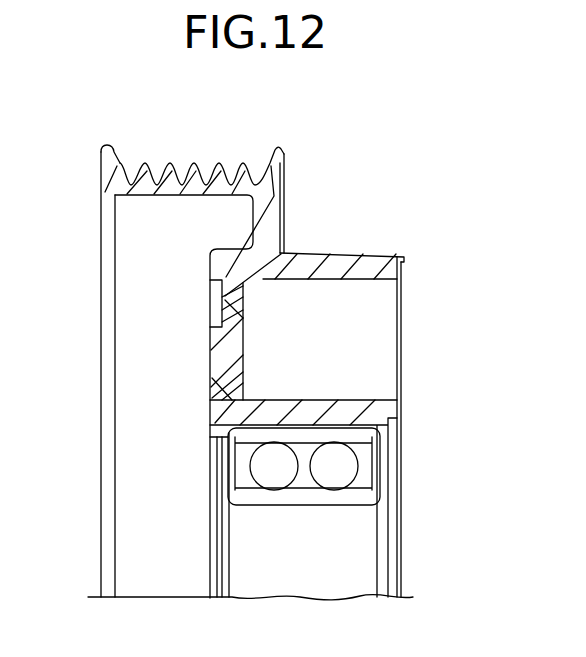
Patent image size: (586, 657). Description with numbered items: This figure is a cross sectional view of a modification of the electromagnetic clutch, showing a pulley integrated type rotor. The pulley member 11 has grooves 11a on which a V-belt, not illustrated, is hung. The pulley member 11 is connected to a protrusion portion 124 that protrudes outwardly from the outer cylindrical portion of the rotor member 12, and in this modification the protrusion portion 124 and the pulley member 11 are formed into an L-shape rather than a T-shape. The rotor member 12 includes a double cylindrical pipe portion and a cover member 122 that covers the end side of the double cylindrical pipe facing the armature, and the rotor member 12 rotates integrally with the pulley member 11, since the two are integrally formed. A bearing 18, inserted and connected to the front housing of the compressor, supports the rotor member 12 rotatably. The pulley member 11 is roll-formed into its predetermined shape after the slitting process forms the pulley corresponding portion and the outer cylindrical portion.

The pulley member 11 is at (284, 152).
The grooves 11a is at (224, 162).
The protrusion portion 124 is at (285, 215).
The rotor member 12 is at (404, 258).
The bearing 18 is at (360, 490).
The cover member 122 is at (218, 540).